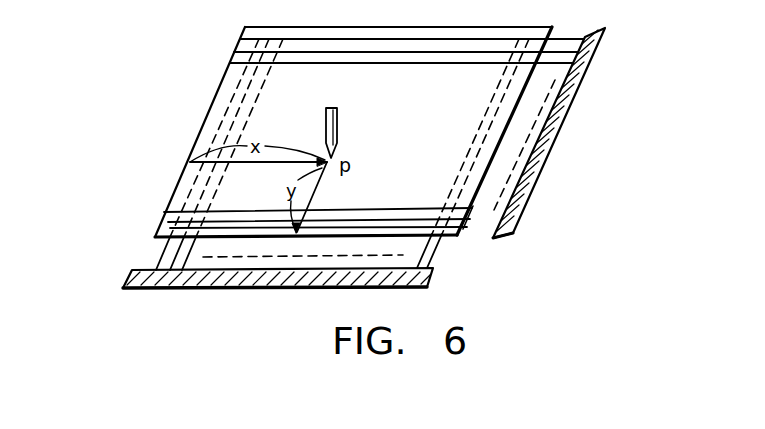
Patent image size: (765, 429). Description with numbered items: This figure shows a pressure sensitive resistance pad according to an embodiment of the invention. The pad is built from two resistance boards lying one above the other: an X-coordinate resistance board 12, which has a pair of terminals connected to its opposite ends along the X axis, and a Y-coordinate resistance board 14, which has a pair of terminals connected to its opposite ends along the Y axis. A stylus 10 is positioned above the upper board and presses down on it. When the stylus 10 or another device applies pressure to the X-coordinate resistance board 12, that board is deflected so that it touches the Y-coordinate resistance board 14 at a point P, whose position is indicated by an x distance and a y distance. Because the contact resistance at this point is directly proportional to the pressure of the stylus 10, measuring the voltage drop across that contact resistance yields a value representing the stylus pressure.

The stylus 10 is at (338, 118).
The X-coordinate resistance board 12 is at (570, 122).
The Y-coordinate resistance board 14 is at (173, 289).